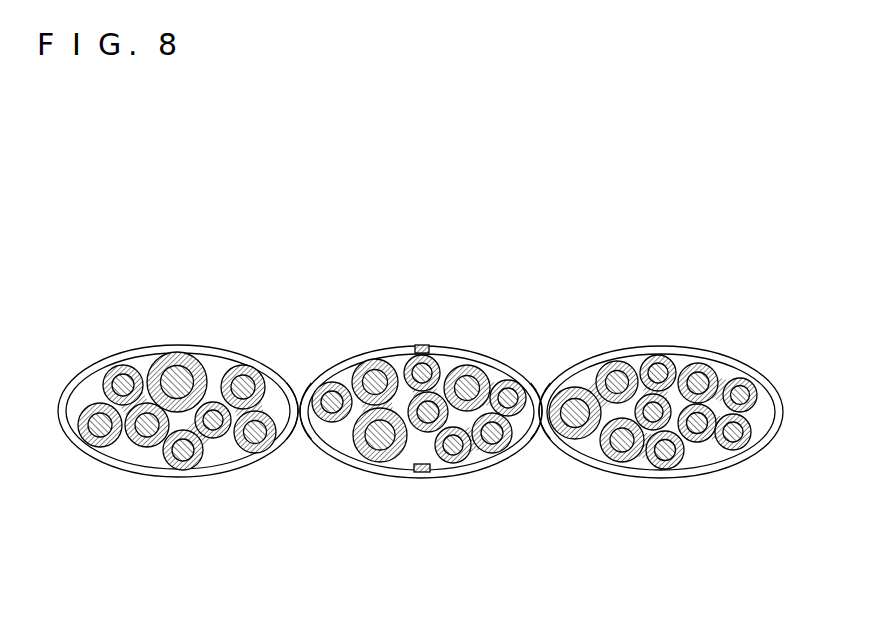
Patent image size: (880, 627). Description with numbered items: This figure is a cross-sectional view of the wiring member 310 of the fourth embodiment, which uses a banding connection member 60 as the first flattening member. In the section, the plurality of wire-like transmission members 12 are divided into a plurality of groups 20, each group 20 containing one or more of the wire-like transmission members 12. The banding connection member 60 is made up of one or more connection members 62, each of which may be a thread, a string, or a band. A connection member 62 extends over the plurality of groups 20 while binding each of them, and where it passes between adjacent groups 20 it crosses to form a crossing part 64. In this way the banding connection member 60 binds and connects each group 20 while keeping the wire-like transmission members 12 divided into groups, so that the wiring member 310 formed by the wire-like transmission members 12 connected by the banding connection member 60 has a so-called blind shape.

The wiring member 310 is at (120, 243).
The banding connection member 60 is at (338, 313).
The connection member 62 is at (277, 373).
The crossing part 64 is at (297, 452).
The group 20 is at (142, 455).
The wire-like transmission member 12 is at (235, 452).